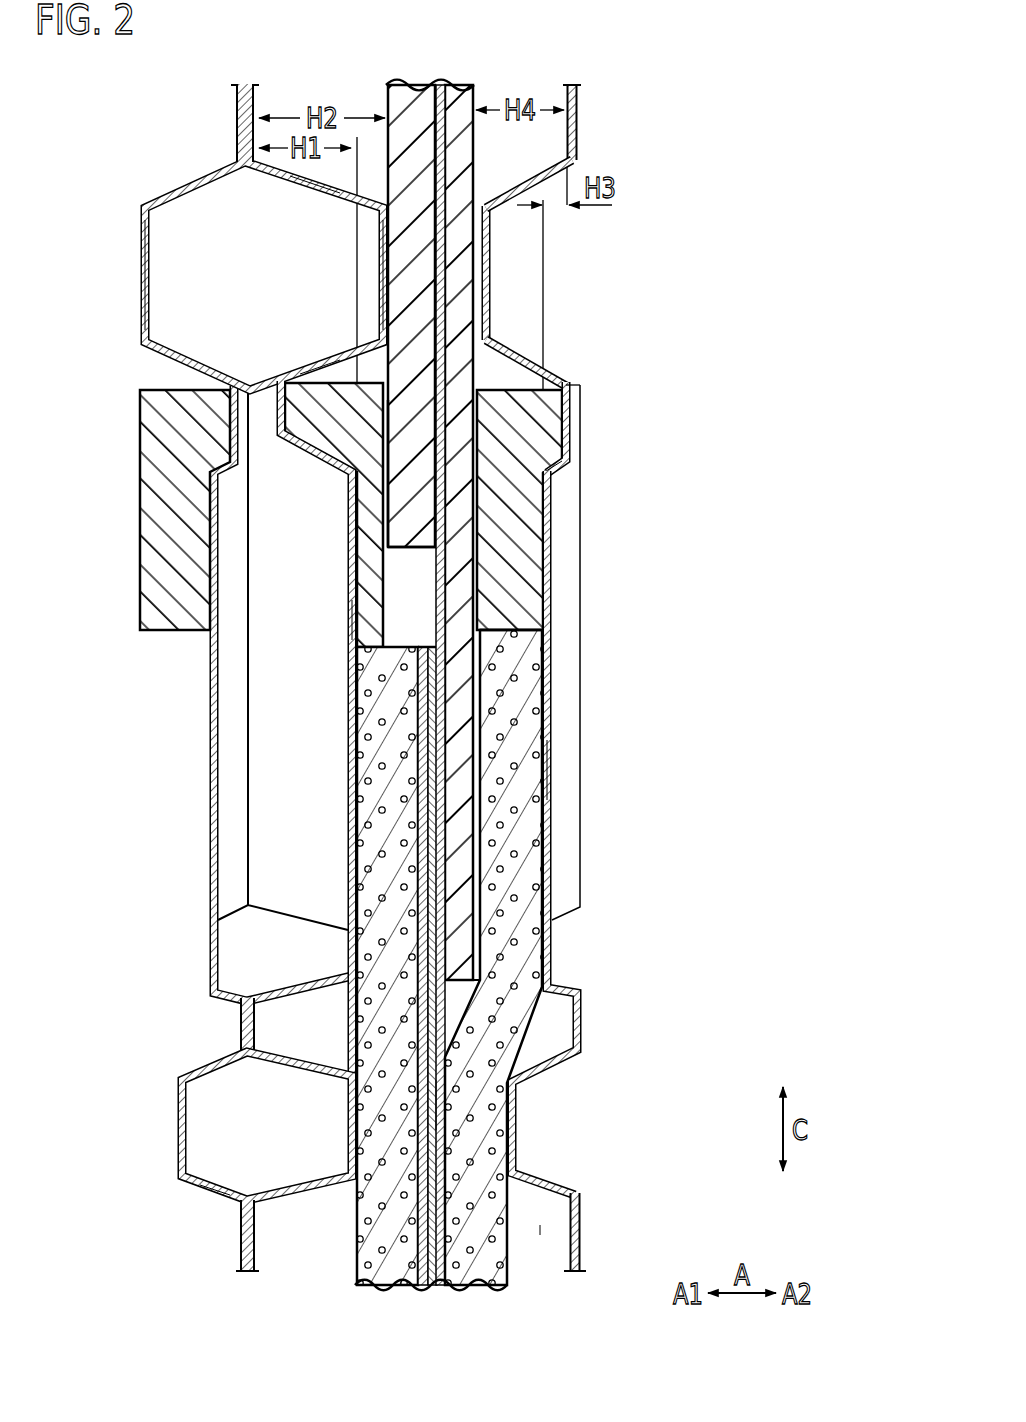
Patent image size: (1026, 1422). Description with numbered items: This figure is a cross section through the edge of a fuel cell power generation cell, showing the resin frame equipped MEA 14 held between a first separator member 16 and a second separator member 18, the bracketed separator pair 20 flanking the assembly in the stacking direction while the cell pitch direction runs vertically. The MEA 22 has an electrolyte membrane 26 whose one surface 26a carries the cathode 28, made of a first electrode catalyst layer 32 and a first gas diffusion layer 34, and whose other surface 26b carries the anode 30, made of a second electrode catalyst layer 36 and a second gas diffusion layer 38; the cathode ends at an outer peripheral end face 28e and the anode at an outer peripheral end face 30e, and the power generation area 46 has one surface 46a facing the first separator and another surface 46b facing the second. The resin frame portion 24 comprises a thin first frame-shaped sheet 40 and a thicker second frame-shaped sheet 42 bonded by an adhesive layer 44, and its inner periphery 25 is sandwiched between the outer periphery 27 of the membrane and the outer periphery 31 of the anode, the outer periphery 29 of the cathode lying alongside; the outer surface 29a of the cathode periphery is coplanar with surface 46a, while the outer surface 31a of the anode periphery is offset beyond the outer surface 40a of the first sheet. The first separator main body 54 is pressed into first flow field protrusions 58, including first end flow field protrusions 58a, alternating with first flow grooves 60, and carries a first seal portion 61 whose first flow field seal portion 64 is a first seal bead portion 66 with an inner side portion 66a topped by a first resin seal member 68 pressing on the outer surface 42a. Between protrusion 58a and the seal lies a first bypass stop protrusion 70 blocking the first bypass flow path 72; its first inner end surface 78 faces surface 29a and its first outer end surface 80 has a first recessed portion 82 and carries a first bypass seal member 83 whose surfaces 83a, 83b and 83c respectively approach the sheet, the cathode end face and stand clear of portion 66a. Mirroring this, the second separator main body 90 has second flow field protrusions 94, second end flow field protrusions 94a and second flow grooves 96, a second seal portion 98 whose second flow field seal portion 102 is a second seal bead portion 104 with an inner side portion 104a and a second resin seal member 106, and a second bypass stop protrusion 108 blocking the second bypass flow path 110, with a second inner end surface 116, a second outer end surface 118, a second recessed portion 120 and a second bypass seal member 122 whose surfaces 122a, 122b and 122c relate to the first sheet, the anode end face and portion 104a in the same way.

The resin frame equipped membrane electrode assembly 14 is at (465, 490).
The first separator member 16 is at (275, 97).
The second separator member 18 is at (232, 104).
The pipe unit 20 is at (247, 81).
The membrane electrode assembly 22 is at (534, 1202).
The resin frame portion 24 is at (554, 493).
The inner periphery of the resin frame portion 25 is at (424, 701).
The electrolyte membrane 26 is at (449, 685).
The one surface of the electrolyte membrane 26a is at (425, 1112).
The other surface of the electrolyte membrane 26b is at (438, 1107).
The outer periphery of the electrolyte membrane 27 is at (432, 748).
The cathode 28 is at (329, 963).
The outer peripheral end face of the cathode 28e is at (380, 642).
The outer periphery of the cathode 29 is at (347, 966).
The outer surface of the outer periphery of the cathode 29a is at (382, 851).
The anode 30 is at (548, 939).
The outer peripheral end face of the anode 30e is at (519, 630).
The outer periphery of the anode 31 is at (549, 957).
The outer surface of the outer periphery of the anode 31a is at (549, 722).
The first electrode catalyst layer 32 is at (423, 1142).
The first gas diffusion layer 34 is at (385, 1156).
The second electrode catalyst layer 36 is at (443, 1138).
The second gas diffusion layer 38 is at (479, 1150).
The first frame-shaped sheet 40 is at (466, 137).
The outer surface of the first frame-shaped sheet 40a is at (474, 161).
The second frame-shaped sheet 42 is at (410, 485).
The outer surface of the second frame-shaped sheet 42a is at (390, 513).
The adhesive layer 44 is at (436, 598).
The power generation area 46 is at (365, 1278).
The one surface of the power generation area 46a is at (356, 1241).
The other surface of the power generation area 46b is at (507, 1257).
The first separator main body 54 is at (352, 890).
The first flow field protrusion 58 is at (186, 1025).
The first end flow field protrusion 58a is at (243, 1033).
The first flow groove 60 is at (378, 1166).
The first seal portion 61 is at (334, 276).
The first flow field seal portion 64 is at (334, 276).
The first seal bead portion 66 is at (326, 199).
The inner side portion of the first seal bead portion 66a is at (316, 368).
The first resin seal member 68 is at (382, 233).
The first bypass stop protrusion 70 is at (350, 576).
The first bypass flow path 72 is at (400, 578).
The first inner end surface 78 is at (357, 804).
The first outer end surface 80 is at (352, 613).
The first recessed portion 82 is at (318, 400).
The first bypass seal member 83 is at (258, 671).
The outer surface of the first bypass seal member facing the resin frame portion 83a is at (392, 557).
The outer surface of the first bypass seal member facing the MEA 83b is at (366, 704).
The outer surface of the first bypass seal member opposite the MEA 83c is at (348, 392).
The second separator main body 90 is at (551, 768).
The second flow field protrusion 94 is at (387, 707).
The second end flow field protrusion 94a is at (212, 981).
The second flow groove 96 is at (218, 1222).
The second seal portion 98 is at (590, 253).
The second flow field seal portion 102 is at (590, 253).
The second seal bead portion 104 is at (505, 212).
The inner side portion of the second seal bead portion 104a is at (564, 381).
The second resin seal member 106 is at (149, 303).
The second bypass stop protrusion 108 is at (553, 578).
The second bypass flow path 110 is at (526, 370).
The second inner end surface 116 is at (522, 948).
The second outer end surface 118 is at (539, 508).
The second recessed portion 120 is at (571, 444).
The second bypass seal member 122 is at (380, 786).
The outer surface of the second bypass seal member facing the resin frame portion 122a is at (549, 474).
The outer surface of the second bypass seal member facing the MEA 122b is at (541, 657).
The outer surface of the second bypass seal member opposite the MEA 122c is at (513, 386).